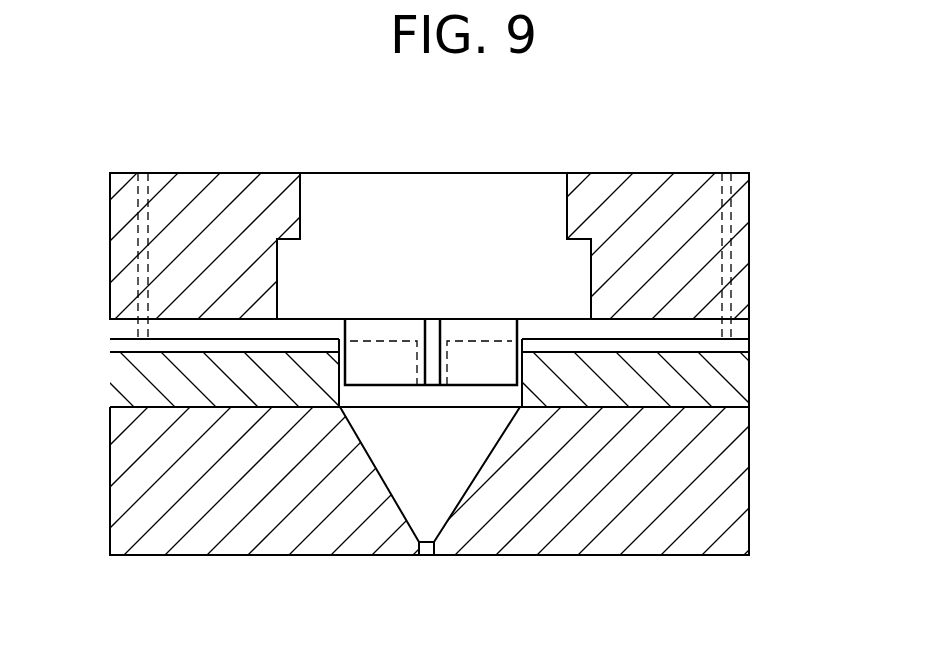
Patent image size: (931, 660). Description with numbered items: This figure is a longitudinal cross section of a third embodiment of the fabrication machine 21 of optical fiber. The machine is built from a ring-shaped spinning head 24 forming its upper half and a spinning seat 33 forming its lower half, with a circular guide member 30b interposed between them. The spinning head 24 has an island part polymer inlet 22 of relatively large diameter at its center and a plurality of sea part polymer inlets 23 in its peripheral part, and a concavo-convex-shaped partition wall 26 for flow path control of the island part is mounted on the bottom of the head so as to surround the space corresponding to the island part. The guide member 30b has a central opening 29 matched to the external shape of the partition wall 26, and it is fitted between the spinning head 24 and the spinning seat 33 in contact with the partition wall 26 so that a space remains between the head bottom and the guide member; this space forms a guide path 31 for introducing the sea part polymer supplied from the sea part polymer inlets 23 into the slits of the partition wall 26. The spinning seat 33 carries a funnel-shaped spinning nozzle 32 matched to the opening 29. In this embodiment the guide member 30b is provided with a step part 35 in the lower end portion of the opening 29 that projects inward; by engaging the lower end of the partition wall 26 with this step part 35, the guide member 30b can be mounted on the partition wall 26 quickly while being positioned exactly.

The fabrication machine 21 is at (768, 413).
The island part polymer inlet 22 is at (568, 196).
The sea part polymer inlets 23 is at (155, 216).
The ring-shaped spinning head 24 is at (287, 163).
The partition wall 26 is at (409, 398).
The opening 29 is at (513, 363).
The circular guide member 30b is at (147, 398).
The guide path 31 is at (160, 345).
The funnel-shaped spinning nozzle 32 is at (467, 488).
The spinning seat 33 is at (746, 506).
The step part 35 is at (343, 396).